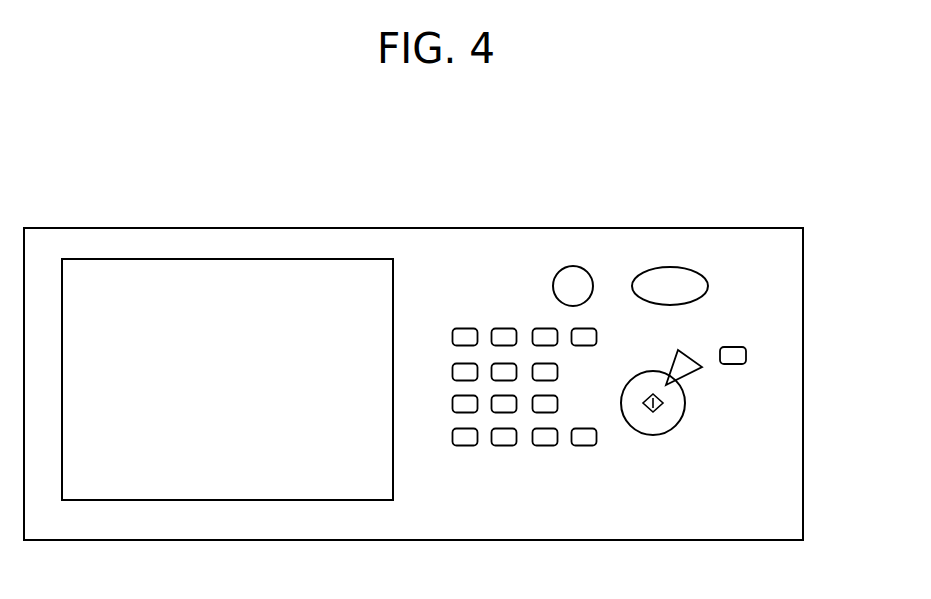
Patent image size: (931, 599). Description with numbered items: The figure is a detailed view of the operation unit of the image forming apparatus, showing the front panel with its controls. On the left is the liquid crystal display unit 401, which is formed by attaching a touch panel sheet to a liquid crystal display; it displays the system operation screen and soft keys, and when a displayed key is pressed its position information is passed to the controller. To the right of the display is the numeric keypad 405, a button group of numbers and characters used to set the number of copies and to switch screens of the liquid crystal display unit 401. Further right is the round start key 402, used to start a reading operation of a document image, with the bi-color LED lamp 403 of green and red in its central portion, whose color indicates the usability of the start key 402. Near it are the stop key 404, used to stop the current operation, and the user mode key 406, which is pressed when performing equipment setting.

The liquid crystal display unit 401 is at (227, 314).
The start key 402 is at (748, 403).
The bi-color LED lamp 403 is at (737, 302).
The stop key 404 is at (762, 318).
The numeric keypad 405 is at (566, 298).
The user mode key 406 is at (796, 334).